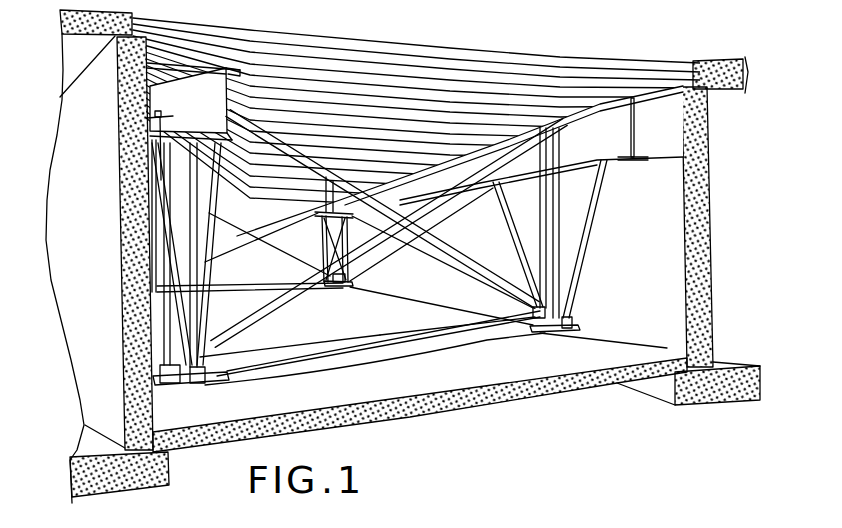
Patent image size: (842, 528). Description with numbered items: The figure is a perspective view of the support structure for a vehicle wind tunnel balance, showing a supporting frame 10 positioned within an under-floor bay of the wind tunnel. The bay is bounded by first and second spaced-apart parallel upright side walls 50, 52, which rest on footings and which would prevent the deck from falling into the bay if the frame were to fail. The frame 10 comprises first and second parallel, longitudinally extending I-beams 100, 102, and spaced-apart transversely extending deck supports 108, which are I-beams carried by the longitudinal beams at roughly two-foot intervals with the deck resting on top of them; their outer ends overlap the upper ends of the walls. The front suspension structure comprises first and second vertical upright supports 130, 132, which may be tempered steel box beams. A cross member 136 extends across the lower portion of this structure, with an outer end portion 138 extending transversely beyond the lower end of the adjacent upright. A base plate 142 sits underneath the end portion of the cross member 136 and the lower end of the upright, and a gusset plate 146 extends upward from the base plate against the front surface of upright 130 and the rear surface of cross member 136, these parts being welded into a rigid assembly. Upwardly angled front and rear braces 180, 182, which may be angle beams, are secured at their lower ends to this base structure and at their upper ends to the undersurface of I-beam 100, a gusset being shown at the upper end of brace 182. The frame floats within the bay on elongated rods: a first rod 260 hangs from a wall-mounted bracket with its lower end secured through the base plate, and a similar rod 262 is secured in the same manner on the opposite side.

The frame 10 is at (378, 384).
The side wall 50 is at (707, 221).
The side wall 52 is at (128, 317).
The I-beam 100 is at (625, 135).
The I-beam 102 is at (195, 128).
The deck supports 108 is at (522, 90).
The upright support 130 is at (552, 200).
The upright support 132 is at (192, 250).
The cross member 136 is at (487, 340).
The outer end portion 138 is at (572, 318).
The base plate 142 is at (543, 340).
The gusset plate 146 is at (530, 313).
The brace 180 is at (577, 275).
The brace 182 is at (520, 246).
The rod 260 is at (565, 215).
The rod 262 is at (162, 243).